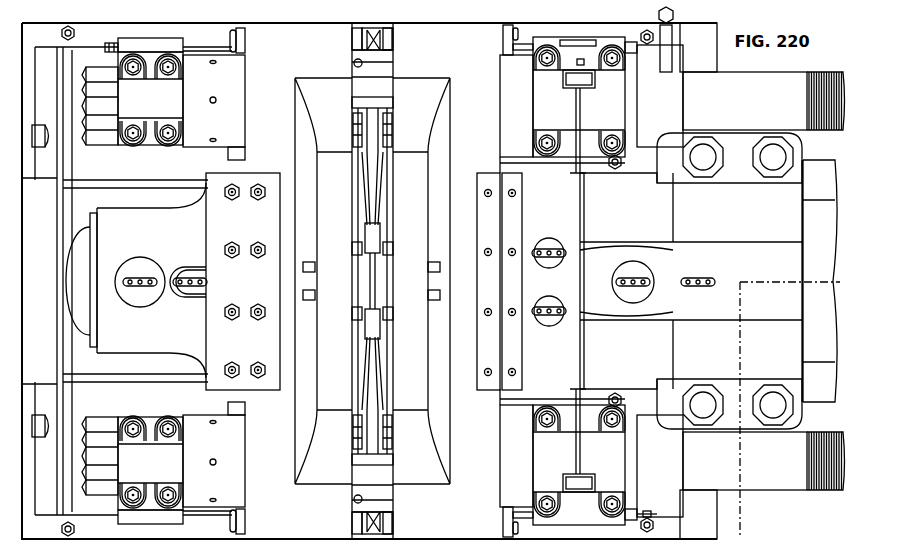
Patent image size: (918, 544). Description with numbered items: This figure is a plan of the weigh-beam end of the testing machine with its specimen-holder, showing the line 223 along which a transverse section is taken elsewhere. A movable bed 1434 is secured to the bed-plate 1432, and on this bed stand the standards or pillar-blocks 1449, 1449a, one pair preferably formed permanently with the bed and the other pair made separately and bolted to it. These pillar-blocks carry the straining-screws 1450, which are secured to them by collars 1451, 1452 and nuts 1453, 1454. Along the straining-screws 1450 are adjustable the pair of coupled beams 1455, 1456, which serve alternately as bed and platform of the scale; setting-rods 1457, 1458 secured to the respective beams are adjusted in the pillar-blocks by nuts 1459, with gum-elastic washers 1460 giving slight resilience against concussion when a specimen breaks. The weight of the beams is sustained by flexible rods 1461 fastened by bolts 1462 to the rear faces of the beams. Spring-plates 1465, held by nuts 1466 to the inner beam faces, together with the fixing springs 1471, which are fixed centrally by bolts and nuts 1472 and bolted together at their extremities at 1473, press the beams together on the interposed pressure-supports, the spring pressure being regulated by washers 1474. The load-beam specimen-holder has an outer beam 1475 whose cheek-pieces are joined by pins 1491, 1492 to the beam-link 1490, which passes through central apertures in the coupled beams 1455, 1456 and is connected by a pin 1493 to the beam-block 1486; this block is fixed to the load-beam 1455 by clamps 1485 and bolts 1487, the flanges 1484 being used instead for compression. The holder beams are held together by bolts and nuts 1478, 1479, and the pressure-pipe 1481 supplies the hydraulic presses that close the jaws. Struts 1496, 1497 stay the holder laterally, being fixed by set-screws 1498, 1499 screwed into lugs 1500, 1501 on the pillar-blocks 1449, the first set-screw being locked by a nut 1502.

The section line 223 is at (786, 407).
The bed-plate 1432 is at (357, 279).
The movable bed 1434 is at (115, 281).
The standards or pillar-blocks 1449 is at (579, 281).
The standards or pillar-blocks 1449a is at (150, 281).
The straining-screws 1450 is at (764, 281).
The collar 1451 is at (660, 281).
The collar 1452 is at (562, 281).
The nut 1453 is at (214, 281).
The nut 1454 is at (100, 281).
The coupled beam 1455 is at (317, 264).
The coupled beam 1456 is at (423, 264).
The setting-rod 1457 is at (358, 283).
The setting-rod 1458 is at (527, 285).
The nuts 1459 is at (372, 277).
The gum-elastic washers 1460 is at (382, 274).
The flexible rods 1461 is at (503, 535).
The bolts 1462 is at (520, 37).
The spring-plates 1465 is at (370, 281).
The nuts 1466 is at (381, 281).
The fixing plates or springs 1471 is at (372, 281).
The bolts and nuts 1472 is at (379, 281).
The bolted connection 1473 is at (382, 281).
The washers 1474 is at (380, 281).
The outer beam of specimen-holder 1475 is at (708, 281).
The bolts 1478 is at (738, 281).
The nuts 1479 is at (729, 281).
The pressure-pipe 1481 is at (688, 273).
The flanges 1484 is at (500, 281).
The clamps 1485 is at (243, 281).
The beam-block 1486 is at (148, 280).
The bolts 1487 is at (245, 365).
The beam-link 1490 is at (77, 281).
The pin 1491 is at (555, 282).
The pin 1492 is at (633, 282).
The pin 1493 is at (140, 282).
The strut 1496 is at (588, 130).
The strut 1497 is at (589, 431).
The set-screw 1498 is at (578, 49).
The set-screw 1499 is at (574, 505).
The lug 1500 is at (579, 79).
The lug 1501 is at (579, 483).
The nut 1502 is at (595, 60).